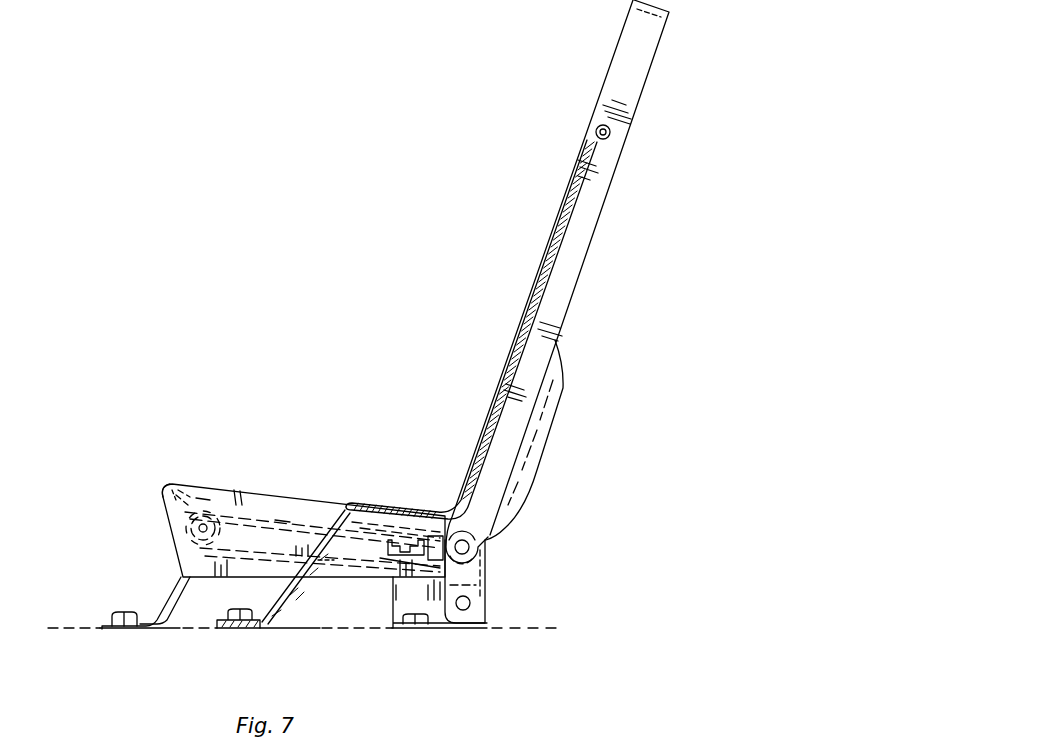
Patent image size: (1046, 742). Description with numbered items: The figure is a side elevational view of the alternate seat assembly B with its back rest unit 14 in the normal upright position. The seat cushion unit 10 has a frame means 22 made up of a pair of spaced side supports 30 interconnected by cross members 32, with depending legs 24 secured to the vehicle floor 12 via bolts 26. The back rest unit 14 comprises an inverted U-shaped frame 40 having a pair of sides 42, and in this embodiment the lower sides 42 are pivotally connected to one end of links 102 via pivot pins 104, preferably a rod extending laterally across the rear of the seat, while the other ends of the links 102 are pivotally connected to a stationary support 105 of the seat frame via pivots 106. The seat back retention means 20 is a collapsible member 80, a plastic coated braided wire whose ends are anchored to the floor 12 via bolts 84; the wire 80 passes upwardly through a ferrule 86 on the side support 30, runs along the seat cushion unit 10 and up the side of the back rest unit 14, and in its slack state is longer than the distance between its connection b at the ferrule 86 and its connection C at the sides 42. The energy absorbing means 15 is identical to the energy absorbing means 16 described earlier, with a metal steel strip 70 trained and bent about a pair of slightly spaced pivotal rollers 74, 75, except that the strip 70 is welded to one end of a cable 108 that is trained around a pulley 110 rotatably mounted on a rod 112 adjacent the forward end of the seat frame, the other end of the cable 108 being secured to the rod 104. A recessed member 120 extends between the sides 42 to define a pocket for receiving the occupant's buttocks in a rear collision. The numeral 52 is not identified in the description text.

The seat cushion unit 10 is at (178, 476).
The vehicle floor 12 is at (80, 626).
The back rest unit 14 is at (665, 54).
The energy absorbing means 15 is at (385, 578).
The energy absorbing means 16 is at (382, 502).
The seat back retention means 20 is at (546, 236).
The frame means 22 is at (162, 474).
The depending legs 24 is at (165, 603).
The bolts 26 is at (120, 626).
The side supports 30 is at (240, 484).
The cross members 32 is at (160, 490).
The frame 40 is at (660, 100).
The sides 42 is at (566, 272).
The seat bracket 52 is at (172, 500).
The metal steel strip 70 is at (383, 586).
The pivotal roller 74 is at (425, 504).
The pivotal roller 75 is at (401, 502).
The collapsible member 80 is at (580, 206).
The bolts 84 is at (218, 615).
The ferrule 86 is at (326, 578).
The links 102 is at (486, 578).
The pivot pins 104 is at (480, 543).
The stationary support 105 is at (436, 627).
The pivots 106 is at (465, 623).
The cable 108 is at (282, 520).
The pulley 110 is at (203, 516).
The rod 112 is at (198, 529).
The recessed member 120 is at (563, 414).
The seat assembly B is at (432, 400).
The connection C is at (612, 140).
The connection b is at (352, 503).